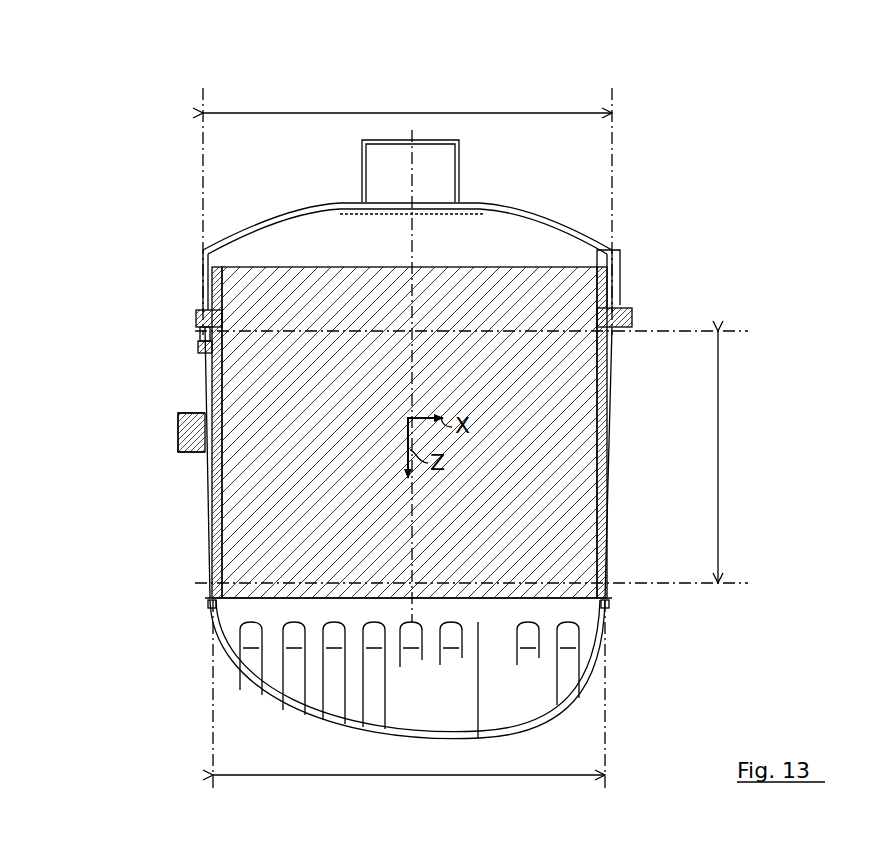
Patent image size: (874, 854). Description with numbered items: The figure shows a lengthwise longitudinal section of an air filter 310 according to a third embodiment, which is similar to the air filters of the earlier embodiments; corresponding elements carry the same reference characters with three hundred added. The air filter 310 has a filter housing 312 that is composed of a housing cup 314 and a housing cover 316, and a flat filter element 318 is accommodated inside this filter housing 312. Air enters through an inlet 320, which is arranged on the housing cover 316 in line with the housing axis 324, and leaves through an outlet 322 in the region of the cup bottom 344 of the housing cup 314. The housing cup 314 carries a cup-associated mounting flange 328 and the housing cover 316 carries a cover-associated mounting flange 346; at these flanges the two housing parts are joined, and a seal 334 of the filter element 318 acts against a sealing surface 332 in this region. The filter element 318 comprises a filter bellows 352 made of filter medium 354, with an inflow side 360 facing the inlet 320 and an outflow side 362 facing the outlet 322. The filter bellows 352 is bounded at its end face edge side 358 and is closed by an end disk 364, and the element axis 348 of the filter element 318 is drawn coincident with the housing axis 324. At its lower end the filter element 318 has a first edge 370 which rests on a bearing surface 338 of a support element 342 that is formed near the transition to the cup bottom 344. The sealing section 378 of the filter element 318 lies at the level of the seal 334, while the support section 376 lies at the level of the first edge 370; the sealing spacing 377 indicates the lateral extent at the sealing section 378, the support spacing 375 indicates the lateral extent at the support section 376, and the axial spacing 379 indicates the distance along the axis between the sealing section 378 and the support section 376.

The air filter 310 is at (125, 120).
The filter housing 312 is at (205, 497).
The housing cup 314 is at (207, 560).
The housing cover 316 is at (290, 210).
The filter element 318 is at (600, 445).
The inlet 320 is at (380, 163).
The outlet 322 is at (530, 695).
The housing axis 324 is at (415, 168).
The cup-associated mounting flange 328 is at (205, 350).
The sealing surface 332 is at (205, 330).
The seal 334 is at (200, 310).
The bearing surface 338 is at (212, 640).
The support element 342 is at (214, 608).
The cup bottom 344 is at (312, 720).
The cover-associated mounting flange 346 is at (622, 318).
The element axis 348 is at (410, 262).
The filter bellows 352 is at (356, 483).
The filter medium 354 is at (572, 507).
The end face edge side 358 is at (218, 382).
The inflow side 360 is at (515, 262).
The outflow side 362 is at (462, 602).
The end disk 364 is at (190, 430).
The first edge 370 is at (228, 596).
The support spacing 375 is at (490, 775).
The support section 376 is at (212, 595).
The sealing spacing 377 is at (380, 113).
The sealing section 378 is at (225, 330).
The axial spacing 379 is at (718, 440).